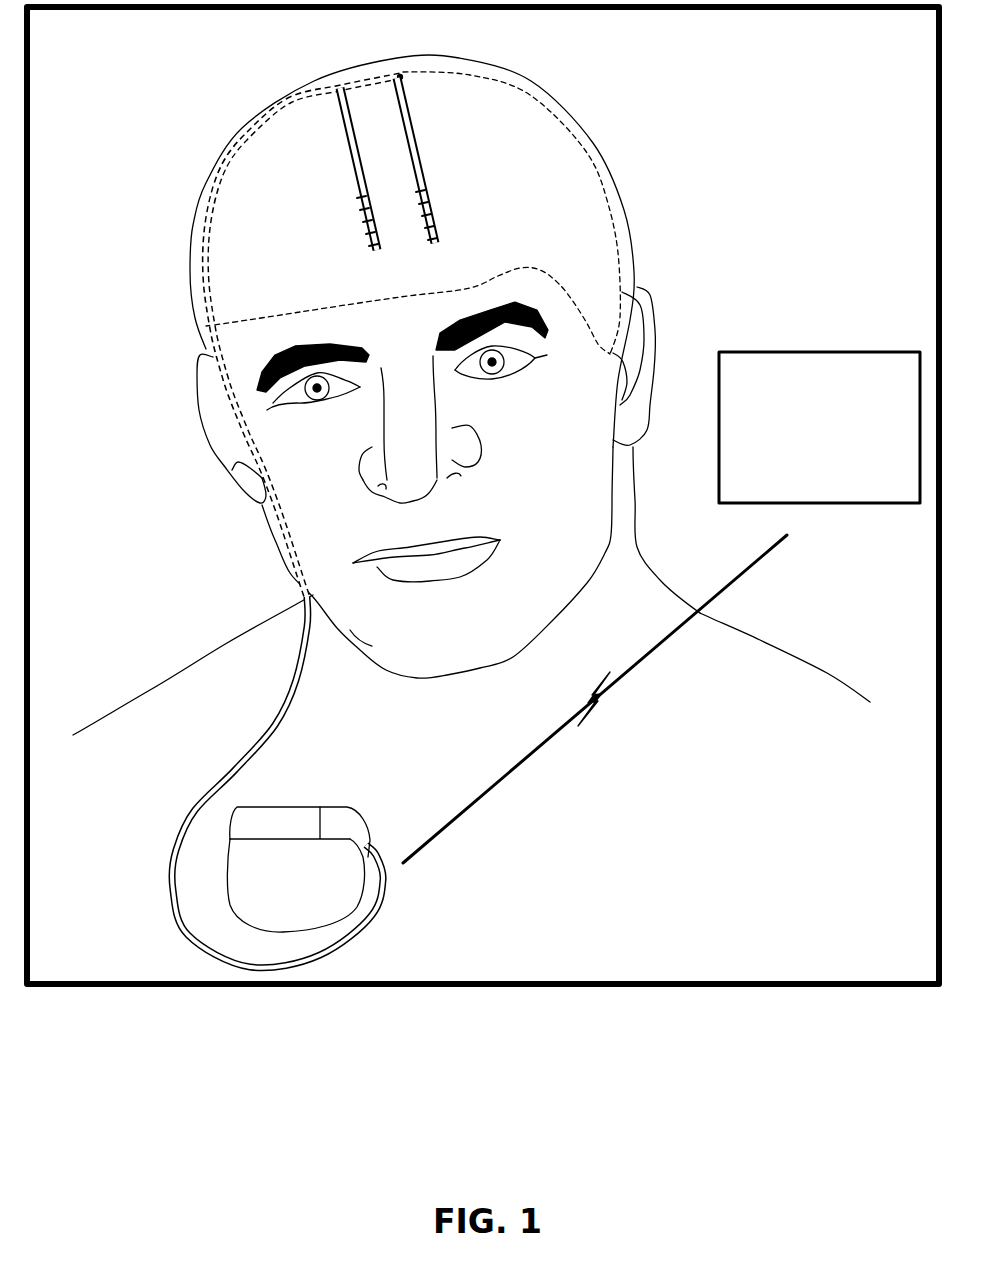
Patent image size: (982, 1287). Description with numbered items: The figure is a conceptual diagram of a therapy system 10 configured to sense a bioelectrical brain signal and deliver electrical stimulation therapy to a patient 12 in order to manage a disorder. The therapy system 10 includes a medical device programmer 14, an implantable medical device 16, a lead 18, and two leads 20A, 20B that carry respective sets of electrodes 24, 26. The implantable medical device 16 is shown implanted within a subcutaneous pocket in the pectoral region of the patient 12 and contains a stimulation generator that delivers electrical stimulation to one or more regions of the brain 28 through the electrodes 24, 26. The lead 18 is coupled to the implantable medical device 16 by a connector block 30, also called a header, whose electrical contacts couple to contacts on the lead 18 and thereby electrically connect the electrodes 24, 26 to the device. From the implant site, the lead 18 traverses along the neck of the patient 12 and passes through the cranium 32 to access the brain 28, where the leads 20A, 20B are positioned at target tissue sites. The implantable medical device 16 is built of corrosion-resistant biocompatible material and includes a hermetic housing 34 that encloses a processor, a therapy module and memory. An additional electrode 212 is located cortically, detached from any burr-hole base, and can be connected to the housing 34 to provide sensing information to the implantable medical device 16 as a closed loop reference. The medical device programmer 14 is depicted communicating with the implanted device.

The therapy system 10 is at (700, 80).
The patient 12 is at (150, 688).
The medical device programmer 14 is at (811, 452).
The implantable medical device 16 is at (298, 842).
The lead 18 is at (273, 705).
The lead 20A is at (366, 178).
The lead 20B is at (427, 170).
The electrodes 24 is at (357, 192).
The electrodes 26 is at (440, 180).
The brain 28 is at (617, 193).
The connector block 30 is at (363, 827).
The cranium 32 is at (632, 253).
The hermetic housing 34 is at (228, 875).
The electrode 212 is at (407, 85).